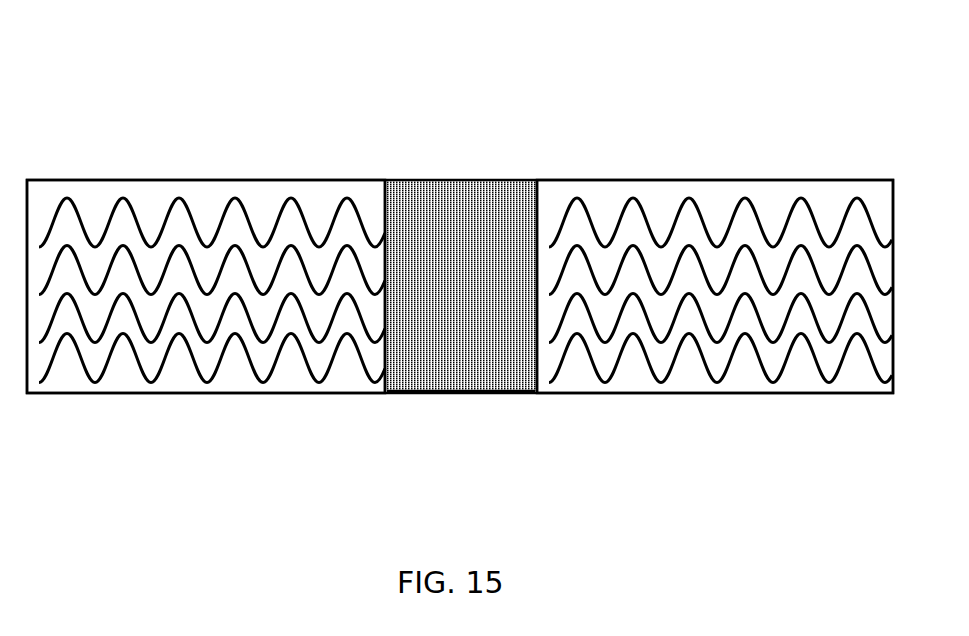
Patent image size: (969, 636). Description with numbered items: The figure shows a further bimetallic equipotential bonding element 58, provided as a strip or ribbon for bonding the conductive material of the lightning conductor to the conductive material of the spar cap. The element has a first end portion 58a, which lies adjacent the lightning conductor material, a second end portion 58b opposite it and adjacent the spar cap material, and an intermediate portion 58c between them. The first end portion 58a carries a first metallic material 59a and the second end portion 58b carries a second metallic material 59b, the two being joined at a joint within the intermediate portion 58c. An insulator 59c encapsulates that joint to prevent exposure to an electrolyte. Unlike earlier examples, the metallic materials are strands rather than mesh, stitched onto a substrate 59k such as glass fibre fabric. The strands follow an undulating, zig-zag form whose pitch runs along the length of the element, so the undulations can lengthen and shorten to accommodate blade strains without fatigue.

The equipotential bonding element 58 is at (227, 123).
The first end portion 58a is at (177, 387).
The second end portion 58b is at (747, 385).
The intermediate portion 58c is at (473, 195).
The first metallic material 59a is at (105, 233).
The second metallic material 59b is at (767, 242).
The insulator 59c is at (477, 383).
The substrate 59k is at (289, 385).